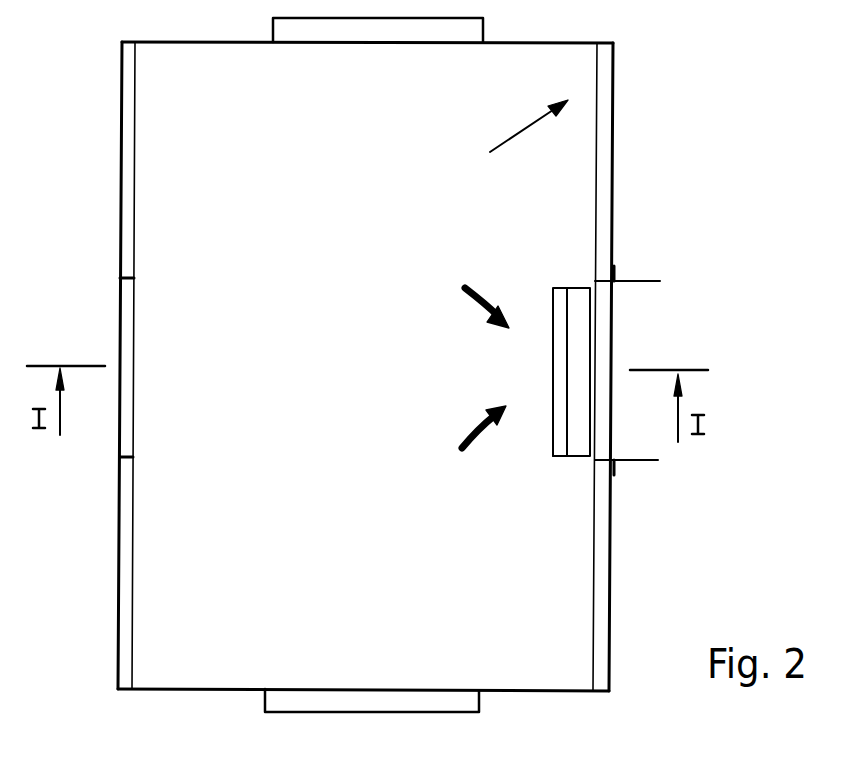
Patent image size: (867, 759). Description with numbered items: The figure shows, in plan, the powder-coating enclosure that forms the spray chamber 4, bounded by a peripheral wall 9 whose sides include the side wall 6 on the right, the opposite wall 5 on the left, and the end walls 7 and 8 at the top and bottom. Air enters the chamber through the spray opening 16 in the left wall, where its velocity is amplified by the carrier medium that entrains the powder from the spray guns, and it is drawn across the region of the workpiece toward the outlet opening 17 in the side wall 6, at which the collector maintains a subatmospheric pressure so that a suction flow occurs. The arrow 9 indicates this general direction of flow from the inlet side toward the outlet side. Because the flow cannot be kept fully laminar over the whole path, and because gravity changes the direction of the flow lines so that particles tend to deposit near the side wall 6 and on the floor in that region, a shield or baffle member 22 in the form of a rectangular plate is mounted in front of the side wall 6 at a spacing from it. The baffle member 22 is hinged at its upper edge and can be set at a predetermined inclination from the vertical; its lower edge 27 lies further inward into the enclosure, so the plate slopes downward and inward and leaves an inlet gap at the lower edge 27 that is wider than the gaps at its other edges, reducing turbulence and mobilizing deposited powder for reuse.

The spray chamber 4 is at (397, 365).
The left side wall 5 is at (135, 173).
The side wall 6 is at (597, 171).
The top wall 7 is at (532, 47).
The bottom wall 8 is at (509, 689).
The peripheral wall 9 is at (510, 146).
The spray opening 16 is at (128, 322).
The outlet opening 17 is at (600, 338).
The shield or baffle member 22 is at (553, 372).
The lower edge 27 is at (553, 458).